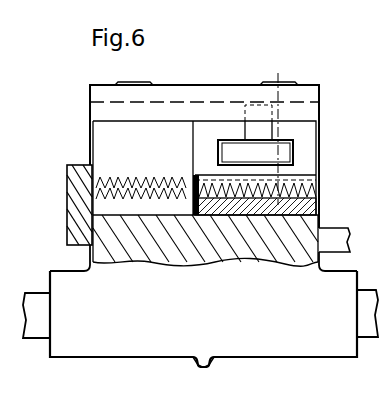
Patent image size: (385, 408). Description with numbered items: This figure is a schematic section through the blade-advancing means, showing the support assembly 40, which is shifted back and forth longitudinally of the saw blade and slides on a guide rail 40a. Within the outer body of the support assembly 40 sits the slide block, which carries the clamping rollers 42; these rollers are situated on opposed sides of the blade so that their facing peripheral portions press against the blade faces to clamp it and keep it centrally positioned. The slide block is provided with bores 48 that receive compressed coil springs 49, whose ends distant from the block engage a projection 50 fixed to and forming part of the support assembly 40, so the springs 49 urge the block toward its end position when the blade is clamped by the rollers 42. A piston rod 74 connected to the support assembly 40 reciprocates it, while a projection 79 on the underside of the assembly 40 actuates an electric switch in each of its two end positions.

The support assembly 40 is at (196, 243).
The guide rail 40a is at (36, 328).
The clamping rollers 42 is at (268, 150).
The bores 48 is at (245, 216).
The compressed coil springs 49 is at (128, 198).
The projection 50 is at (77, 233).
The piston rod 74 is at (338, 231).
The projection 79 is at (196, 364).